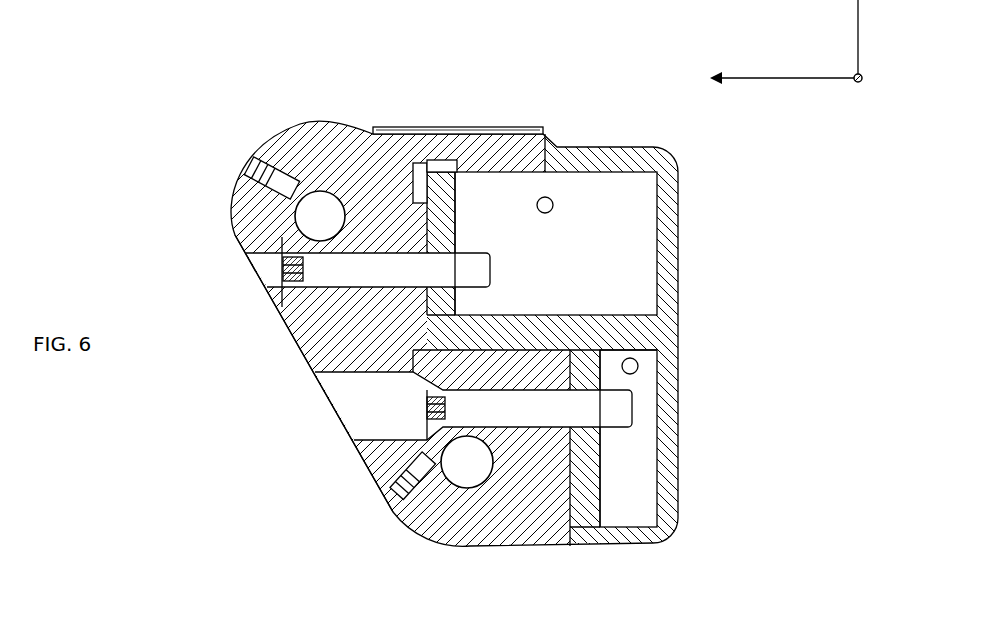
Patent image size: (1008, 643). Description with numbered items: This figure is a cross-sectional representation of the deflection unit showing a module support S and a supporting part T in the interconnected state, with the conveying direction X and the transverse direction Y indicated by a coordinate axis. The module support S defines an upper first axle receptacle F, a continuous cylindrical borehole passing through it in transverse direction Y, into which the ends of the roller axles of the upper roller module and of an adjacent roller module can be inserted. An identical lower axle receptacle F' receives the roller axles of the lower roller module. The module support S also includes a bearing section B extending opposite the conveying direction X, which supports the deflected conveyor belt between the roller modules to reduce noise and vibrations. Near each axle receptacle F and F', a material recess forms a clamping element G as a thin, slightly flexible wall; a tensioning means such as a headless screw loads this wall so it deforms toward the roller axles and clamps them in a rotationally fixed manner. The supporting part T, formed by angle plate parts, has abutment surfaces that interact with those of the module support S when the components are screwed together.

The bearing section B is at (468, 126).
The clamping element G is at (281, 198).
The first axle receptacle F is at (278, 254).
The axle receptacle F' is at (487, 516).
The module support S is at (315, 315).
The supporting part T is at (672, 303).
The conveying direction X is at (784, 92).
The transverse direction Y is at (869, 49).